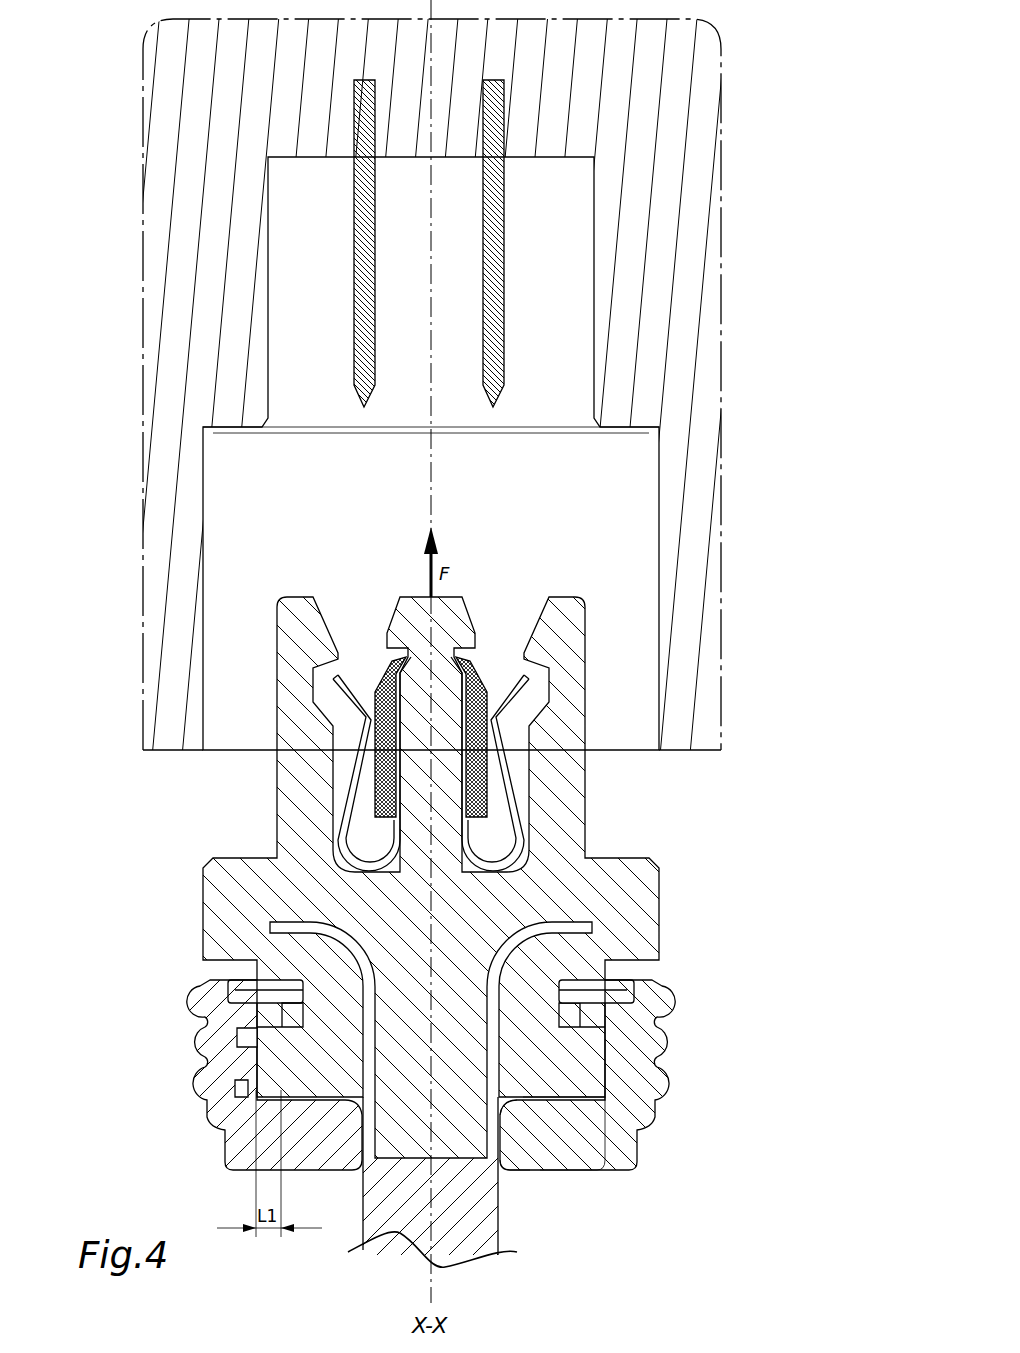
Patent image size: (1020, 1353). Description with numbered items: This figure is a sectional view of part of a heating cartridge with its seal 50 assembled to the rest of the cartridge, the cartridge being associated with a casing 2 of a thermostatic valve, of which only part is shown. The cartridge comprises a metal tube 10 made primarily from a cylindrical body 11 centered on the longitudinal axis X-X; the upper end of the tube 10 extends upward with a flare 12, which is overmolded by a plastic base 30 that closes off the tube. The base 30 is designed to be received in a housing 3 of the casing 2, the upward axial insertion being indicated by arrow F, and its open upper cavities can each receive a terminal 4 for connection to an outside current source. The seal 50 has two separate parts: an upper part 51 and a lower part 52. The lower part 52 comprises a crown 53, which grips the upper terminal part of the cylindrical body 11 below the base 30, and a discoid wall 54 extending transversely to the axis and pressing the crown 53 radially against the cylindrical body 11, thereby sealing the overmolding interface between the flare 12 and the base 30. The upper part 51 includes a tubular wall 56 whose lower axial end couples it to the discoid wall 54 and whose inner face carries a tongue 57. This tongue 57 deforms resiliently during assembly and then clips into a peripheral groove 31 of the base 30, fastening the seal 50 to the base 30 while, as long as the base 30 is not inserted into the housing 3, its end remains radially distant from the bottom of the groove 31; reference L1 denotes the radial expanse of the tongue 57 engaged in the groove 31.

The casing 2 is at (730, 142).
The housing 3 is at (431, 471).
The terminal 4 is at (354, 290).
The metal tube 10 is at (505, 1234).
The cylindrical body 11 is at (500, 1215).
The flare 12 is at (318, 978).
The base 30 is at (203, 860).
The peripheral groove 31 is at (568, 1003).
The seal 50 is at (96, 1100).
The upper part 51 is at (222, 1037).
The lower part 52 is at (290, 1160).
The crown 53 is at (523, 1158).
The discoid wall 54 is at (582, 1150).
The tubular wall 56 is at (665, 1062).
The tongue 57 is at (602, 1003).